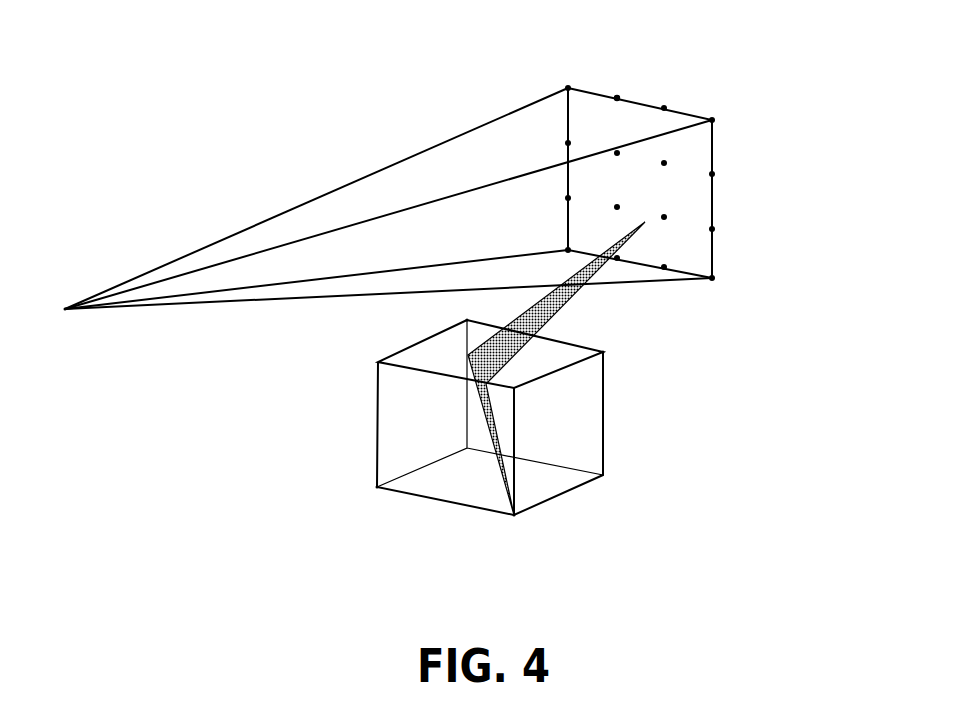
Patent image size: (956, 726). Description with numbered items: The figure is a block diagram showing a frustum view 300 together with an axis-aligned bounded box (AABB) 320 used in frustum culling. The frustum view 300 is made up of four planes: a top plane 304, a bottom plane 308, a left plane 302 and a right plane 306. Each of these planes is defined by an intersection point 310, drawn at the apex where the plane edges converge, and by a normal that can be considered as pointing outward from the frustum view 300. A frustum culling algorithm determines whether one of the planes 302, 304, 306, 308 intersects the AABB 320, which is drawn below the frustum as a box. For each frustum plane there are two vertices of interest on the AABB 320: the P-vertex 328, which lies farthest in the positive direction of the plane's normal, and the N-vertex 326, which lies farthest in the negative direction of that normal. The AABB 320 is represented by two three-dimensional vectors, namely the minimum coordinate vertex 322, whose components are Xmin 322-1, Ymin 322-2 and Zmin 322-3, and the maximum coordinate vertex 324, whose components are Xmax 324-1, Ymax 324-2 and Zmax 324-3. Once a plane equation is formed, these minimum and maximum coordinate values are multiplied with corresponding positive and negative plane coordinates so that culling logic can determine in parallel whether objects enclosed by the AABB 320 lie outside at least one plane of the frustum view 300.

The frustum view 300 is at (809, 99).
The left plane 302 is at (468, 158).
The top plane 304 is at (622, 93).
The right plane 306 is at (713, 210).
The bottom plane 308 is at (390, 282).
The intersection point 310 is at (67, 307).
The axis-aligned bounded box 320 is at (604, 437).
The minimum coordinate vertex 322 is at (374, 490).
The Xmin 322-1 is at (195, 497).
The Ymin 322-2 is at (277, 500).
The Zmin 322-3 is at (345, 500).
The maximum coordinate vertex 324 is at (604, 356).
The Xmax 324-1 is at (665, 332).
The Ymax 324-2 is at (735, 333).
The Zmax 324-3 is at (808, 333).
The N-vertex 326 is at (470, 318).
The P-vertex 328 is at (540, 525).